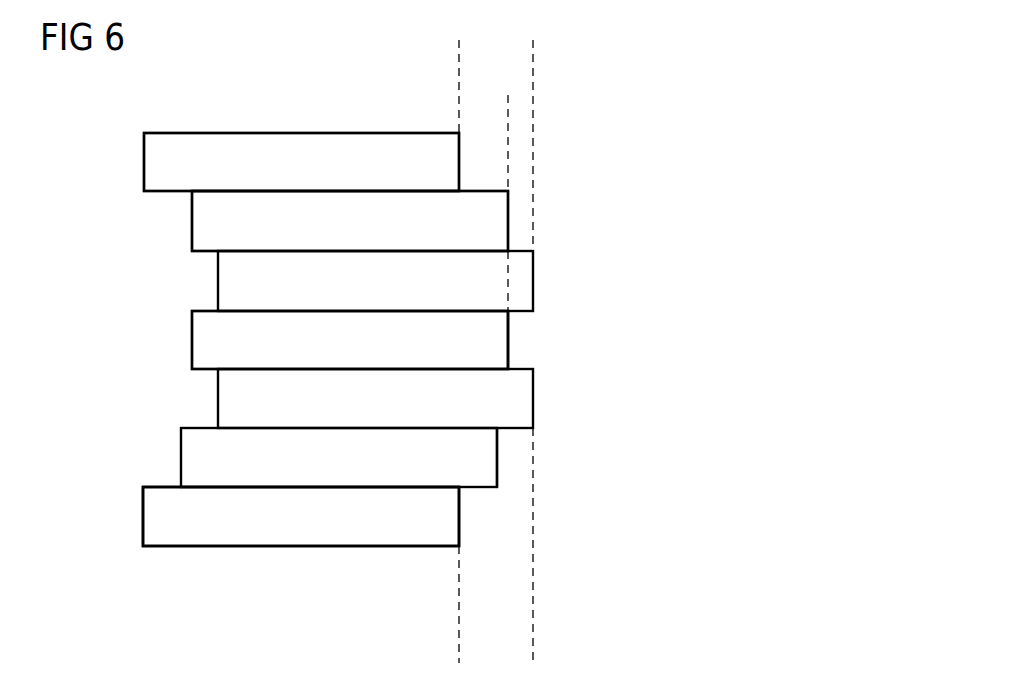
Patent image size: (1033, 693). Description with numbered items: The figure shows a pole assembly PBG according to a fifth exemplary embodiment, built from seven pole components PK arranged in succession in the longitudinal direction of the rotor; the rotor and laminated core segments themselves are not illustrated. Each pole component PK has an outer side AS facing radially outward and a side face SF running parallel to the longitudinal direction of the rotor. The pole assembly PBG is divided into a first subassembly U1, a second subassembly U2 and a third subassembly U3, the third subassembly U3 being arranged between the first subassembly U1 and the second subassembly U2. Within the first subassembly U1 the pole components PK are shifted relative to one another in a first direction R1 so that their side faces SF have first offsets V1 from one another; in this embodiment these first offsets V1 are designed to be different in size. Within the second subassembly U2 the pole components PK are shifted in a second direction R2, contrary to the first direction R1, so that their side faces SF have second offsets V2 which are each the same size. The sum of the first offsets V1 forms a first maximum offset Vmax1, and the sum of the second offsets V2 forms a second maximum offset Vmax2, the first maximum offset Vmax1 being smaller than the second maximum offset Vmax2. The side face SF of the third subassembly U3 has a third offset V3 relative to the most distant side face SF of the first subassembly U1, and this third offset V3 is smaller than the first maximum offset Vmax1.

The pole assembly PBG is at (764, 58).
The pole component PK is at (227, 221).
The outer side AS is at (291, 158).
The side face SF is at (508, 338).
The first direction R1 is at (405, 115).
The second direction R2 is at (403, 593).
The first offset V1 is at (508, 107).
The second offset V2 is at (425, 567).
The third offset V3 is at (508, 152).
The first maximum offset Vmax1 is at (533, 54).
The second maximum offset Vmax2 is at (459, 653).
The first subassembly U1 is at (522, 133).
The second subassembly U2 is at (713, 546).
The third subassembly U3 is at (538, 369).